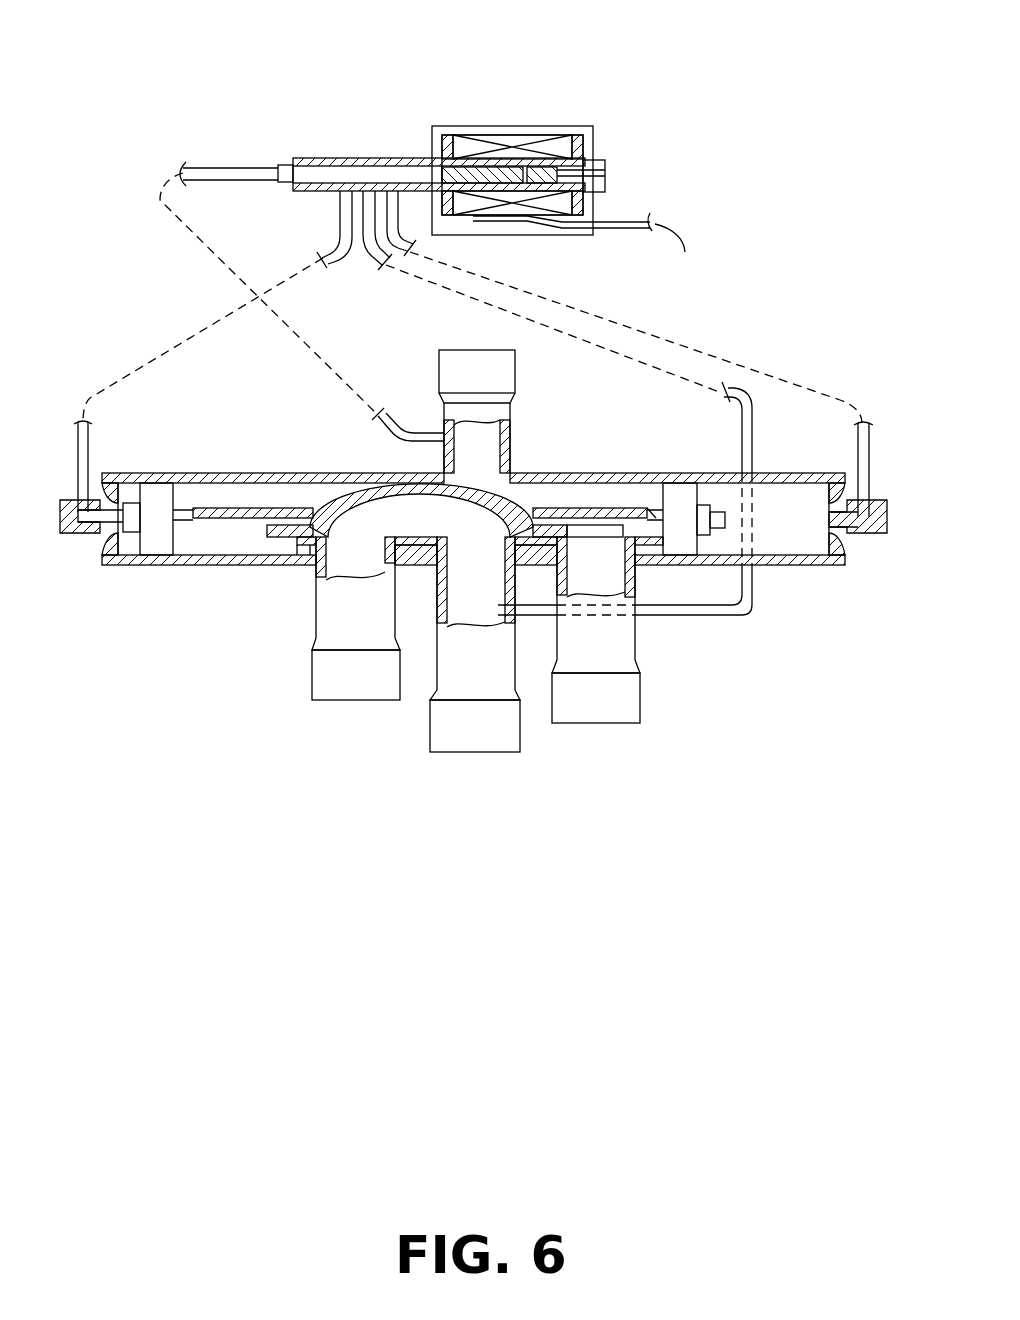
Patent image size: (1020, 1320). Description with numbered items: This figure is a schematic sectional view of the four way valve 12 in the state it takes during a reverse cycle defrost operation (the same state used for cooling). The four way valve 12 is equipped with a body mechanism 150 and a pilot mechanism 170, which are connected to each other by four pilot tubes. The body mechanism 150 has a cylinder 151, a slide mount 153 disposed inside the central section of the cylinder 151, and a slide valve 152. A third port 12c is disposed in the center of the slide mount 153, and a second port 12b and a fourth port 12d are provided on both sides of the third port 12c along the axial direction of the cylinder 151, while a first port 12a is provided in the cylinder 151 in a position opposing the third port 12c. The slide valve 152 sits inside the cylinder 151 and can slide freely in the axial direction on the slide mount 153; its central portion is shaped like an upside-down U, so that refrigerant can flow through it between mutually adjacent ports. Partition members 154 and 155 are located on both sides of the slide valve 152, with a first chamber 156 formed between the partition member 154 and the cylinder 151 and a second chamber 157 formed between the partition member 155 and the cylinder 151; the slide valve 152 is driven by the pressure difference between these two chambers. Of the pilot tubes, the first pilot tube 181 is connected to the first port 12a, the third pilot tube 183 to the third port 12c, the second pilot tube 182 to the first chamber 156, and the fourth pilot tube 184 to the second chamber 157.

The four way valve 12 is at (741, 172).
The first port 12a is at (500, 378).
The second port 12b is at (598, 712).
The third port 12c is at (488, 743).
The fourth port 12d is at (360, 694).
The body mechanism 150 is at (279, 433).
The cylinder 151 is at (610, 473).
The slide valve 152 is at (636, 505).
The slide mount 153 is at (318, 562).
The partition member 154 is at (686, 537).
The partition member 155 is at (173, 538).
The first chamber 156 is at (794, 542).
The second chamber 157 is at (130, 539).
The pilot mechanism 170 is at (551, 101).
The first pilot tube 181 is at (232, 166).
The second pilot tube 182 is at (415, 240).
The third pilot tube 183 is at (373, 243).
The fourth pilot tube 184 is at (332, 244).